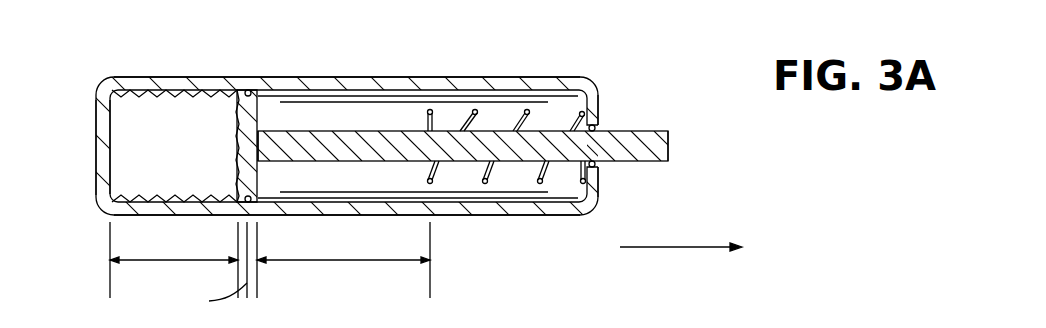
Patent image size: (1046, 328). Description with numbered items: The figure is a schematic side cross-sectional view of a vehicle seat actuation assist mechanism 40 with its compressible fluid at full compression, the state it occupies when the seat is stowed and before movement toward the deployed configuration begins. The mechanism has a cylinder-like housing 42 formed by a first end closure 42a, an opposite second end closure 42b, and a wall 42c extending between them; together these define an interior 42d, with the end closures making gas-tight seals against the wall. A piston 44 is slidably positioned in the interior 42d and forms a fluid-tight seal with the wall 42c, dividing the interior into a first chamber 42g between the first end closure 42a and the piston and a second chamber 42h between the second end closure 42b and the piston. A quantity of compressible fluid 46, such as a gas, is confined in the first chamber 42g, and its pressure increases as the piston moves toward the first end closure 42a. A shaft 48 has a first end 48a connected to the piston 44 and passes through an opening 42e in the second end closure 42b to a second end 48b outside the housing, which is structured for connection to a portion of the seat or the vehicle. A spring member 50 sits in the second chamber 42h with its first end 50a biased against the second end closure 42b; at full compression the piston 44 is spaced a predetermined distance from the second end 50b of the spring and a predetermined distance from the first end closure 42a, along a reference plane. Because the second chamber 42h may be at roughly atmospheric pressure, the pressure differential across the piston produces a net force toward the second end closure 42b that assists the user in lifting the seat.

The seat actuation assist mechanism 40 is at (728, 44).
The housing 42 is at (423, 72).
The first end closure 42a is at (97, 140).
The second end closure 42b is at (603, 103).
The wall 42c is at (247, 84).
The interior 42d is at (333, 115).
The opening 42e is at (604, 167).
The first chamber 42g is at (120, 92).
The second chamber 42h is at (390, 112).
The piston 44 is at (235, 112).
The compressible fluid 46 is at (102, 163).
The shaft 48 is at (640, 130).
The first end of shaft 48a is at (270, 140).
The second end of shaft 48b is at (648, 162).
The spring member 50 is at (488, 181).
The first end of spring member 50a is at (575, 110).
The second end of spring member 50b is at (430, 110).